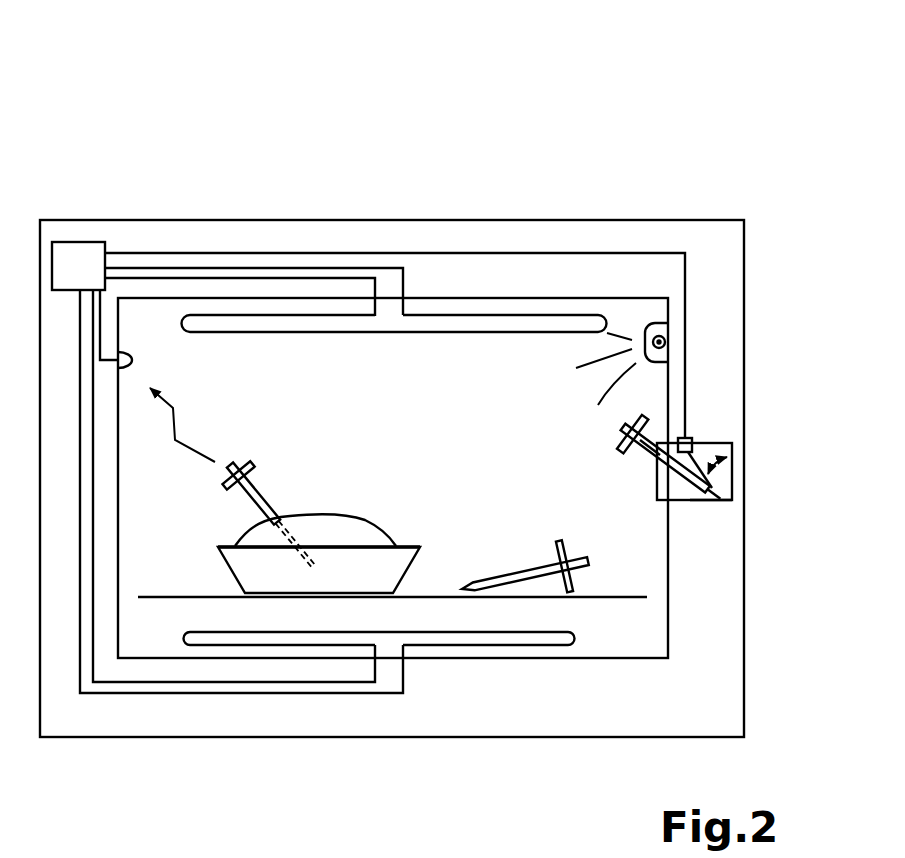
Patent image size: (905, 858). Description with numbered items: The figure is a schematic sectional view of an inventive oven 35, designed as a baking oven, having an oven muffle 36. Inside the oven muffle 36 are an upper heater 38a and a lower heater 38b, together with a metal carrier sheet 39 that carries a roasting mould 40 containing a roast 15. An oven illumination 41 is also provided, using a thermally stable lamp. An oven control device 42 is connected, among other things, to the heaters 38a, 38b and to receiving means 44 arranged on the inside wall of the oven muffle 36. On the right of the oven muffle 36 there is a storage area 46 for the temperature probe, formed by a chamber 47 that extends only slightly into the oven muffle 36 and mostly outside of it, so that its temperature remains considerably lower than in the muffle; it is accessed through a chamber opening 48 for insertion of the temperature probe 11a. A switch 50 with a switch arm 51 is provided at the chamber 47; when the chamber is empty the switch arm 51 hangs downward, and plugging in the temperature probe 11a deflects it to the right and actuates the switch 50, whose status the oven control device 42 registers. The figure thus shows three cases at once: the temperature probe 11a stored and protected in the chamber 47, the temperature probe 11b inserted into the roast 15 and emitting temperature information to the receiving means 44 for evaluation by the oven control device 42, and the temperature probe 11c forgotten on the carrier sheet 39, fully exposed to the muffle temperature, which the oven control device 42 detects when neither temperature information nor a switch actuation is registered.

The oven 35 is at (574, 85).
The oven muffle 36 is at (192, 358).
The upper heater 38a is at (430, 315).
The lower heater 38b is at (468, 647).
The metal carrier sheet 39 is at (618, 600).
The roasting mould 40 is at (413, 560).
The roast 15 is at (354, 532).
The oven illumination 41 is at (648, 322).
The oven control device 42 is at (60, 250).
The receiving means 44 is at (128, 353).
The temperature probe 11a is at (583, 445).
The temperature probe 11b is at (285, 473).
The temperature probe 11c is at (508, 535).
The storage area 46 is at (717, 514).
The chamber 47 is at (732, 480).
The chamber opening 48 is at (660, 435).
The switch 50 is at (692, 440).
The switch arm 51 is at (736, 448).